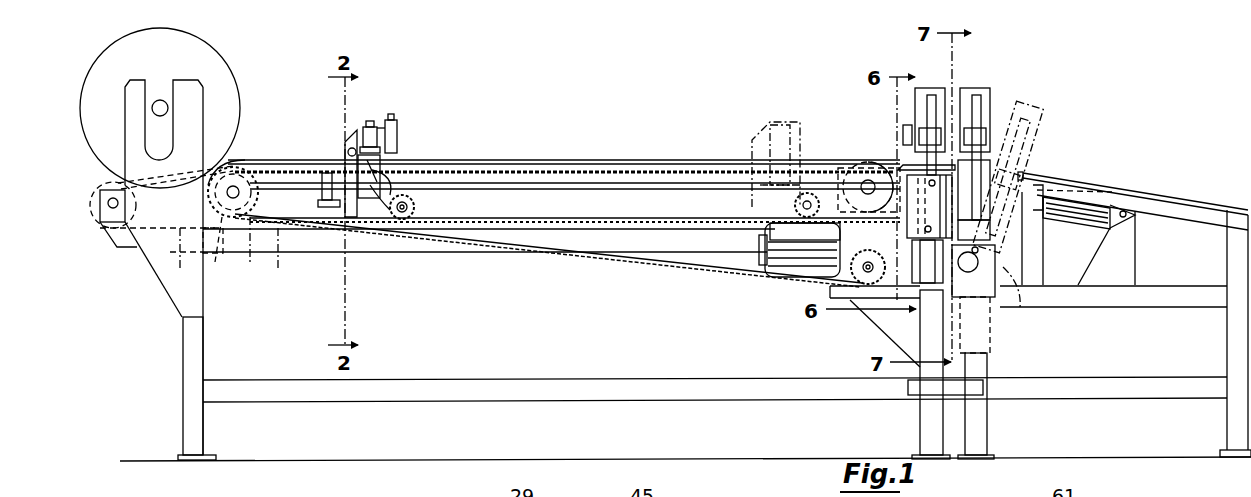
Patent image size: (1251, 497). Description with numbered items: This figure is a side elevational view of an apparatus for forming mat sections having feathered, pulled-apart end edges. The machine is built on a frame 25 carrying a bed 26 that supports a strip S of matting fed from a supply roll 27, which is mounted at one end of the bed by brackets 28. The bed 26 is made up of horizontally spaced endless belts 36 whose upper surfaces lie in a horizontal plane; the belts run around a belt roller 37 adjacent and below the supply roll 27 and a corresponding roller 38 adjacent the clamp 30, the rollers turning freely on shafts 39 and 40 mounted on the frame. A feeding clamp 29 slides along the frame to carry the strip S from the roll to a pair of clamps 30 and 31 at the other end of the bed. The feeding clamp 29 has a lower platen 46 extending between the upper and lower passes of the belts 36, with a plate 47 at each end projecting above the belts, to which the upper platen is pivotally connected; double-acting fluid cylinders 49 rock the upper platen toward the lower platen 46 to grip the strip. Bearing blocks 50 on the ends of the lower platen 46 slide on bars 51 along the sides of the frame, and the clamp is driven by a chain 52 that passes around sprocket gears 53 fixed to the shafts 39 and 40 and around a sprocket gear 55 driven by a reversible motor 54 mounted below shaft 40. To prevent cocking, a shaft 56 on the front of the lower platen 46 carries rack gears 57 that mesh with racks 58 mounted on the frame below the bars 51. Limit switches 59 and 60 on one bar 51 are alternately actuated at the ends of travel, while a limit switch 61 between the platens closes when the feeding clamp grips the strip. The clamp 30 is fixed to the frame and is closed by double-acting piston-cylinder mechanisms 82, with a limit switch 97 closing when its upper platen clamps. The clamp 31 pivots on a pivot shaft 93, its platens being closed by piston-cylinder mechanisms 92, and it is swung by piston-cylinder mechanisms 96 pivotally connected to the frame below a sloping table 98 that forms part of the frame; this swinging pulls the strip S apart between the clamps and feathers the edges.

The frame 25 is at (460, 402).
The bed 26 is at (528, 158).
The supply roll 27 is at (228, 77).
The brackets 28 is at (168, 278).
The feeding clamp 29 is at (372, 128).
The clamp 30 is at (930, 86).
The clamp 31 is at (975, 86).
The endless belts 36 is at (700, 158).
The belt roller 37 is at (203, 255).
The roller 38 is at (862, 168).
The shaft 39 is at (237, 185).
The shaft 40 is at (868, 182).
The lower platen 46 is at (352, 216).
The plate 47 is at (345, 156).
The double-acting fluid cylinders 49 is at (392, 172).
The bearing blocks 50 is at (282, 202).
The bars 51 is at (540, 184).
The chain 52 is at (618, 170).
The sprocket gears 53 is at (255, 176).
The reversible motor 54 is at (782, 280).
The sprocket gear 55 is at (866, 272).
The shaft 56 is at (410, 220).
The rack gear 57 is at (417, 208).
The racks 58 is at (522, 221).
The limit switch 59 is at (836, 230).
The limit switch 60 is at (330, 210).
The limit switch 61 is at (398, 130).
The double-acting piston-cylinder mechanisms 82 is at (900, 246).
The double-acting piston-cylinder mechanisms 92 is at (1000, 300).
The pivot shaft 93 is at (998, 290).
The double-acting piston-cylinder mechanisms 96 is at (1095, 206).
The limit switch 97 is at (903, 130).
The sloping table 98 is at (1190, 198).
The strip S is at (592, 158).